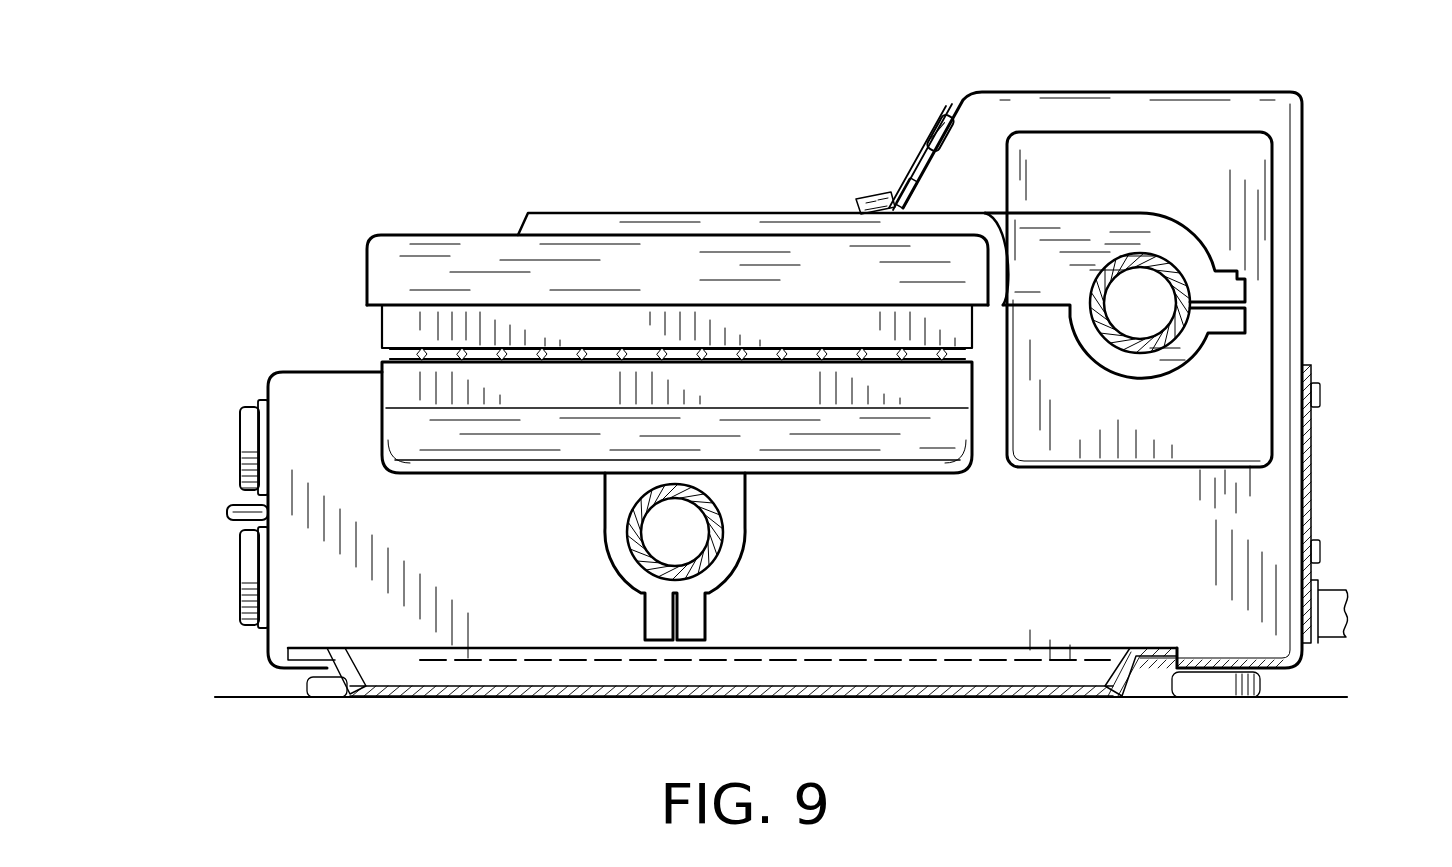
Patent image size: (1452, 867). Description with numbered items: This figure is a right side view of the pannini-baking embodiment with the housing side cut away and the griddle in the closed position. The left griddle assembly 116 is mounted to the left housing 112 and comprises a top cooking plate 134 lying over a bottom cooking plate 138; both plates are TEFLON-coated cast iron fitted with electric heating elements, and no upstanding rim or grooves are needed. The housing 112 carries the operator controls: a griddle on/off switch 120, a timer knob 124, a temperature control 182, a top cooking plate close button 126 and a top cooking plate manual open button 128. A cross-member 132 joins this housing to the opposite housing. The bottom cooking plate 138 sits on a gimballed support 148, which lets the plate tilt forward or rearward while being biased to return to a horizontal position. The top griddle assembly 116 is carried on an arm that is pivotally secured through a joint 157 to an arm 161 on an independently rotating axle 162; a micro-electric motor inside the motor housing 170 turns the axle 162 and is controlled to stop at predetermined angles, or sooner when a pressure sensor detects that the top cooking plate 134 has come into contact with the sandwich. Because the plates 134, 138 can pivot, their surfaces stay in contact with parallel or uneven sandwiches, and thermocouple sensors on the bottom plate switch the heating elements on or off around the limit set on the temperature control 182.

The left housing 112 is at (1305, 256).
The left griddle assembly 116 is at (366, 241).
The griddle on/off switch 120 is at (226, 504).
The timer knob 124 is at (867, 188).
The top cooking plate close button 126 is at (237, 438).
The top cooking plate manual open button 128 is at (237, 577).
The cross-member 132 is at (1315, 510).
The top cooking plate 134 is at (377, 355).
The bottom cooking plate 138 is at (977, 350).
The gimballed support 148 is at (749, 528).
The joint 157 is at (1007, 240).
The arm 161 is at (1103, 226).
The axle 162 is at (1150, 341).
The motor housing 170 is at (1161, 474).
The temperature control 182 is at (930, 125).